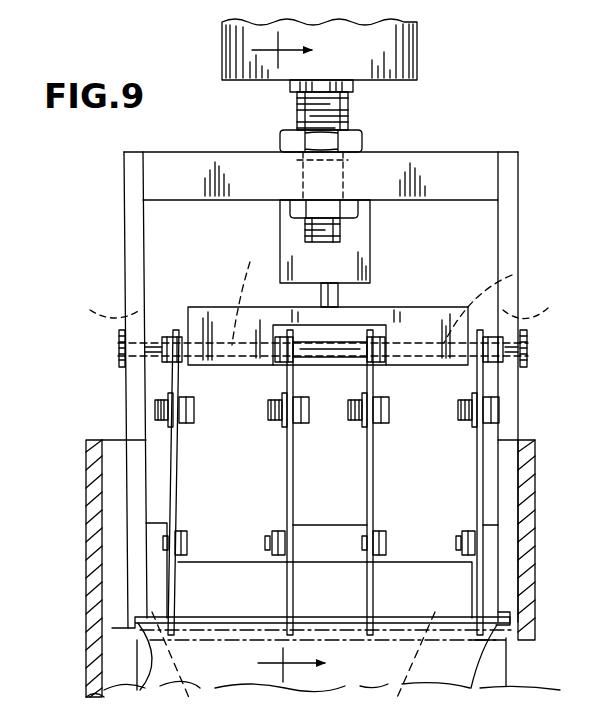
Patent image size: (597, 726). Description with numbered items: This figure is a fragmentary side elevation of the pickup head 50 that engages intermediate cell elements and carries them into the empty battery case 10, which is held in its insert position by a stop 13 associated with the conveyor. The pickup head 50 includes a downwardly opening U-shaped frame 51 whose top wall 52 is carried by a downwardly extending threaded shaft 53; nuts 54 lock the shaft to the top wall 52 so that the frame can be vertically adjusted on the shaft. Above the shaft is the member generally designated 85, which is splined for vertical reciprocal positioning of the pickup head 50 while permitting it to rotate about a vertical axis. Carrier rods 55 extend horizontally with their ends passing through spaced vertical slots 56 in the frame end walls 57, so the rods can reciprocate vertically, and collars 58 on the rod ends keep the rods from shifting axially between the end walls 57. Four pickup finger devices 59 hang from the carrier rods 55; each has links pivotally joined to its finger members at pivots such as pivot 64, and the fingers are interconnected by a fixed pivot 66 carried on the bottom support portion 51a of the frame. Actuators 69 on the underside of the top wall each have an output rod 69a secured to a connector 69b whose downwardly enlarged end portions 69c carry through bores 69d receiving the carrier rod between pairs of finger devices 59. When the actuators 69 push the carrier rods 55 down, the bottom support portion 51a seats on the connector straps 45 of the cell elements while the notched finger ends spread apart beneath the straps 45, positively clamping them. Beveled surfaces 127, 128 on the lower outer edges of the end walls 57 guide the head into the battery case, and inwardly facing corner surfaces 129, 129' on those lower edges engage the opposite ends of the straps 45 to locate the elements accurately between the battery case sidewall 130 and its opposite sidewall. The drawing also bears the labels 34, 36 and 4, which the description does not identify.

The splined member 85 is at (402, 49).
The battery case 10 is at (47, 563).
The threaded shaft 53 is at (312, 98).
The nuts 54 is at (352, 135).
The top wall 52 is at (386, 161).
The U-shaped frame 51 is at (324, 371).
The pickup head 50 is at (331, 371).
The frame end walls 57 is at (132, 210).
The actuators 69 is at (372, 236).
The output rod 69a is at (340, 300).
The connector 69b is at (224, 314).
The downwardly enlarged end portions 69c is at (270, 366).
The through bores 69d is at (392, 291).
The vertical slots 56 is at (323, 304).
The carrier rods 55 is at (120, 348).
The collars 58 is at (118, 368).
The pickup finger devices 59 is at (168, 483).
The pivot 64 is at (190, 420).
The fixed pivot 66 is at (272, 541).
The bottom support portion 51a is at (492, 546).
The apparatus 4 is at (591, 544).
The beveled surface 127 is at (112, 621).
The beveled surface 128 is at (508, 616).
The stop 13 is at (306, 568).
The battery case sidewall 130 is at (96, 462).
The web 34 is at (335, 667).
The web 36 is at (494, 653).
The inwardly facing corner surface 129 is at (130, 668).
The inwardly facing corner surface 129' is at (476, 669).
The connector straps 45 is at (293, 664).